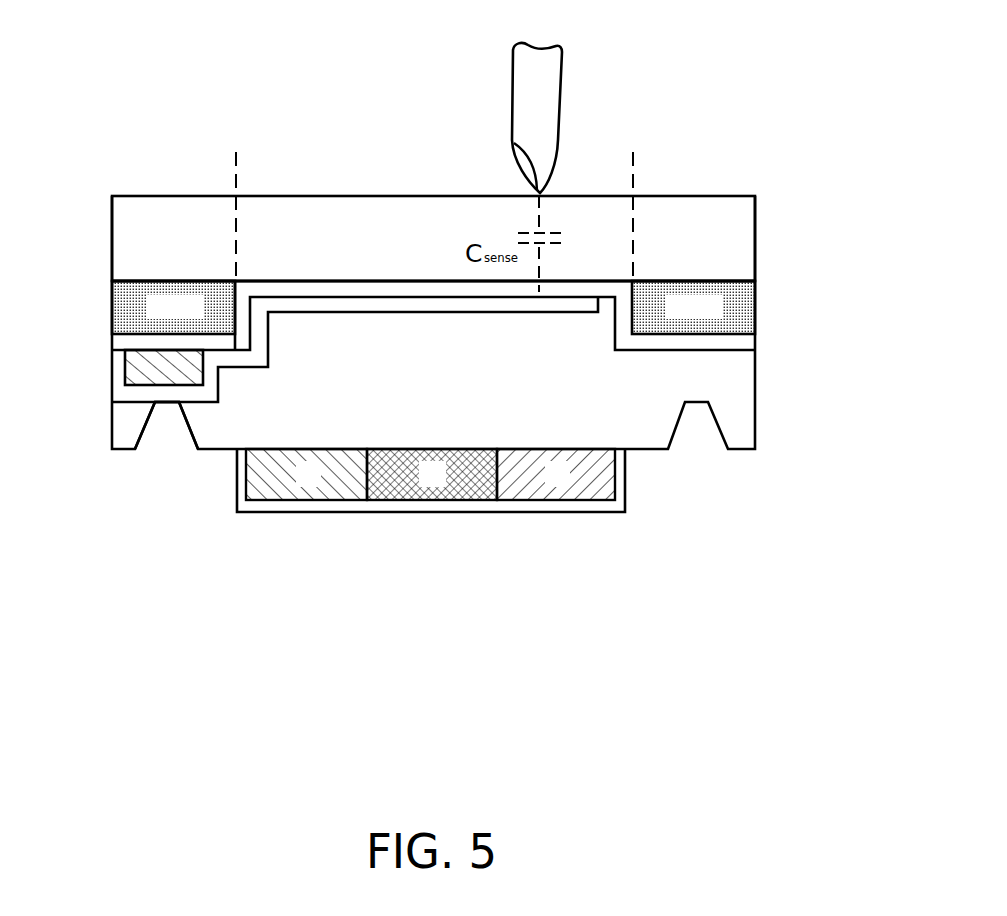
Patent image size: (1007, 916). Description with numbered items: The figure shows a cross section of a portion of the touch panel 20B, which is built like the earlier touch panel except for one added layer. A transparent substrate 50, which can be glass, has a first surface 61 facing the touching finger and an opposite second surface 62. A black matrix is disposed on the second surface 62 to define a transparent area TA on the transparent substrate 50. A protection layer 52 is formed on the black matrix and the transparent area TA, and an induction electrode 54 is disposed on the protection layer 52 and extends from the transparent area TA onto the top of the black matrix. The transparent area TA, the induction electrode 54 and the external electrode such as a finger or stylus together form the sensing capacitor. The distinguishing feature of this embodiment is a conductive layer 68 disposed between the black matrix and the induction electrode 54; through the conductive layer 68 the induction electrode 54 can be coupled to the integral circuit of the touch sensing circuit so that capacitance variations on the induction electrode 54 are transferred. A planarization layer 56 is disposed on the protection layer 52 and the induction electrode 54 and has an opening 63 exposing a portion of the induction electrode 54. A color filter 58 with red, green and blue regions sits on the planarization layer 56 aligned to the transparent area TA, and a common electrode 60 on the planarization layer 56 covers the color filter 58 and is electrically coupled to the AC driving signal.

The touch panel 20B is at (568, 674).
The transparent substrate 50 is at (755, 236).
The protection layer 52 is at (755, 341).
The induction electrode 54 is at (320, 306).
The planarization layer 56 is at (755, 385).
The color filter 58 is at (619, 466).
The common electrode 60 is at (627, 492).
The first surface 61 is at (692, 190).
The second surface 62 is at (757, 281).
The opening 63 is at (163, 436).
The conductive layer 68 is at (135, 368).
The transparent area TA is at (629, 169).